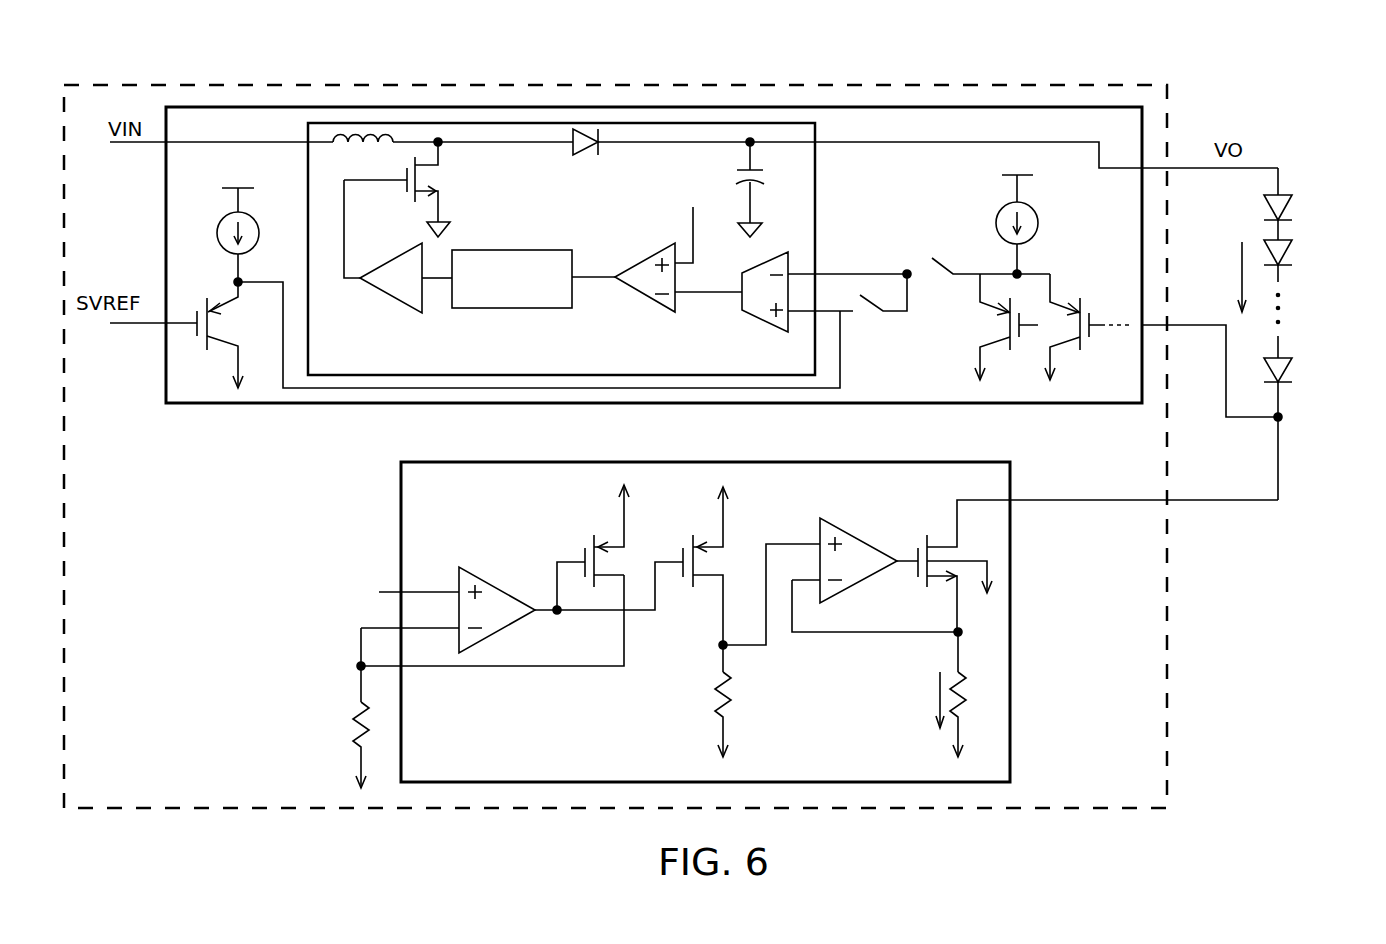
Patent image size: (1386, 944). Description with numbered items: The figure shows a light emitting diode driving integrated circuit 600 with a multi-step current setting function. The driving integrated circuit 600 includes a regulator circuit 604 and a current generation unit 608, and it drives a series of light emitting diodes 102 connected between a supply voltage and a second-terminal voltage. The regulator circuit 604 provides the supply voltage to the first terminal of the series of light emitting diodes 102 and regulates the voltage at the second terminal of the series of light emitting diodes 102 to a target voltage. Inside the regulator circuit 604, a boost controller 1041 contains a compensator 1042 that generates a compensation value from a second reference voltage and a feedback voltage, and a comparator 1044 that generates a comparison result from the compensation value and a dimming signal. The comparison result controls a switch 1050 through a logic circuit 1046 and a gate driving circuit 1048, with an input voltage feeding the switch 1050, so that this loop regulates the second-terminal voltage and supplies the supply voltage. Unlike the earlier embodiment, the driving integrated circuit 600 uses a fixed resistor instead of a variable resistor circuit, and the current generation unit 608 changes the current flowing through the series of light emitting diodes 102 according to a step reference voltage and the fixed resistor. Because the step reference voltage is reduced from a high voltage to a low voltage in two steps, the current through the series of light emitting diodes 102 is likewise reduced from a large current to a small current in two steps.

The driving integrated circuit 600 is at (1168, 120).
The regulator circuit 604 is at (878, 106).
The current generation unit 608 is at (690, 458).
The boost controller 1041 is at (820, 180).
The compensator 1042 is at (765, 321).
The comparator 1044 is at (660, 246).
The logic circuit 1046 is at (502, 248).
The gate driving circuit 1048 is at (393, 297).
The switch 1050 is at (437, 178).
The series of light emitting diodes 102 is at (1302, 190).